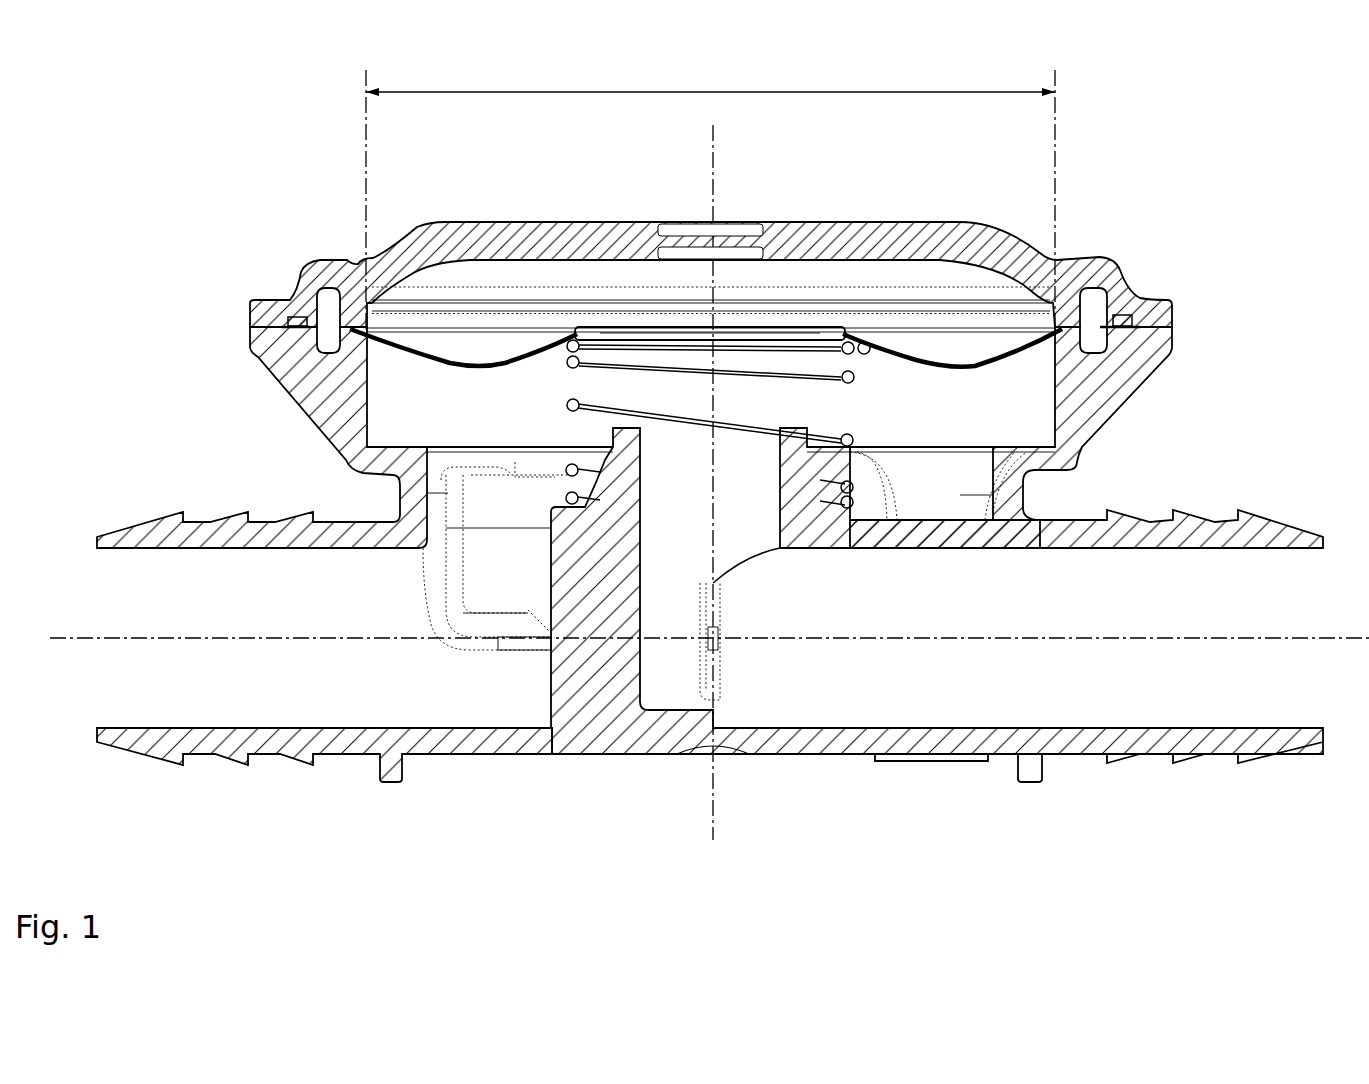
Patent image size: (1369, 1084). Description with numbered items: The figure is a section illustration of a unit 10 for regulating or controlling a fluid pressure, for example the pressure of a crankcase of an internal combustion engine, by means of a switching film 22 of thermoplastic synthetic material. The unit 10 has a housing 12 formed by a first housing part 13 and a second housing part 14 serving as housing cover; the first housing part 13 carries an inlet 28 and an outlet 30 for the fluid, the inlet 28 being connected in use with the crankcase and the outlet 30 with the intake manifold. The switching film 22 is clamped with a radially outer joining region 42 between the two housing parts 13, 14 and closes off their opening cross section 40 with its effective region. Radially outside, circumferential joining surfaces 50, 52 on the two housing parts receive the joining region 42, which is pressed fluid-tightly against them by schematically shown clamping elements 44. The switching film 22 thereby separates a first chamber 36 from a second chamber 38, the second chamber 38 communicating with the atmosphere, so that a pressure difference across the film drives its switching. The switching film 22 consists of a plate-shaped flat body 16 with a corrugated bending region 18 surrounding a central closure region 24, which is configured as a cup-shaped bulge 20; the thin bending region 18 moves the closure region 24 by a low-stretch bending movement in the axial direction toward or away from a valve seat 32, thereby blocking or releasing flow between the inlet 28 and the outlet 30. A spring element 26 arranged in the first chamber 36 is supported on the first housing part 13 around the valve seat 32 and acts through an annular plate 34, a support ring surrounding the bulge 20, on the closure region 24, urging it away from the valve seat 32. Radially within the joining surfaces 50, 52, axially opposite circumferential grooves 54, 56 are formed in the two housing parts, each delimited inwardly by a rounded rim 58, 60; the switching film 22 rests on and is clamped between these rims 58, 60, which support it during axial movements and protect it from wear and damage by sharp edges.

The unit 10 is at (1179, 209).
The housing 12 is at (695, 452).
The first housing part 13 is at (1113, 395).
The second housing part 14 is at (928, 222).
The plate-shaped flat body 16 is at (502, 342).
The bending region 18 is at (423, 350).
The cup-shaped bulge 20 is at (622, 340).
The switching film 22 is at (555, 332).
The closure region 24 is at (760, 335).
The spring element 26 is at (856, 381).
The inlet 28 is at (145, 537).
The outlet 30 is at (1245, 537).
The valve seat 32 is at (612, 428).
The plate 34 is at (852, 340).
The first chamber 36 is at (428, 438).
The second chamber 38 is at (473, 360).
The opening cross section 40 is at (710, 196).
The joining region 42 is at (292, 300).
The clamping elements 44 is at (277, 306).
The joining surface 50 is at (268, 347).
The joining surface 52 is at (290, 322).
The circumferential groove 54 is at (330, 352).
The circumferential groove 56 is at (315, 263).
The rim 58 is at (362, 347).
The rim 60 is at (332, 302).